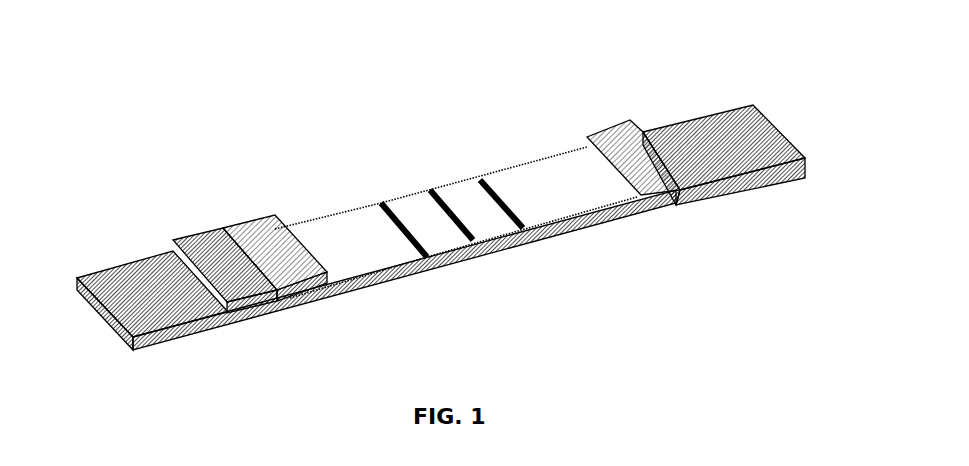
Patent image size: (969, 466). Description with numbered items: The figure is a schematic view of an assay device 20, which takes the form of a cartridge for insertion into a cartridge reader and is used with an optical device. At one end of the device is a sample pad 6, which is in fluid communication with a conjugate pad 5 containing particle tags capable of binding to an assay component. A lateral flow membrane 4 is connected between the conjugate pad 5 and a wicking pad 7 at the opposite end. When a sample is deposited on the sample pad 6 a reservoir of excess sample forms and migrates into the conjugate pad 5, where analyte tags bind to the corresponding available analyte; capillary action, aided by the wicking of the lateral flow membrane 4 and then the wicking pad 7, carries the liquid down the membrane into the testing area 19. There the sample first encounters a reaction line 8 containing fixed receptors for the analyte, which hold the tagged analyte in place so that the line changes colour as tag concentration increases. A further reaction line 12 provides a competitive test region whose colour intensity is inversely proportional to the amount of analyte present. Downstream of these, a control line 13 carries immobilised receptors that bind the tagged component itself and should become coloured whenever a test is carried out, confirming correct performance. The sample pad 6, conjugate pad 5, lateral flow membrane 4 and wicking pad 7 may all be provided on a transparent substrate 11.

The assay device 20 is at (161, 92).
The testing area 19 is at (326, 184).
The transparent substrate 11 is at (722, 195).
The sample pad 6 is at (139, 300).
The conjugate pad 5 is at (275, 248).
The lateral flow membrane 4 is at (573, 184).
The wicking pad 7 is at (705, 143).
The reaction line 8 is at (428, 257).
The further reaction line 12 is at (474, 240).
The control line 13 is at (523, 228).